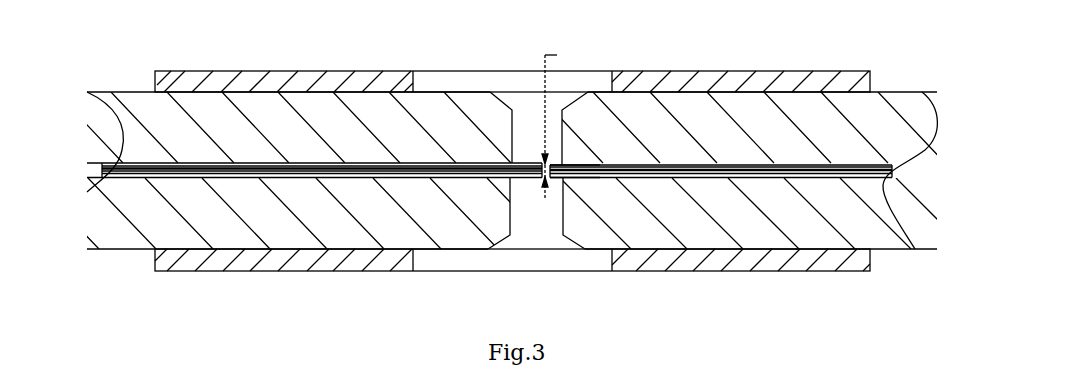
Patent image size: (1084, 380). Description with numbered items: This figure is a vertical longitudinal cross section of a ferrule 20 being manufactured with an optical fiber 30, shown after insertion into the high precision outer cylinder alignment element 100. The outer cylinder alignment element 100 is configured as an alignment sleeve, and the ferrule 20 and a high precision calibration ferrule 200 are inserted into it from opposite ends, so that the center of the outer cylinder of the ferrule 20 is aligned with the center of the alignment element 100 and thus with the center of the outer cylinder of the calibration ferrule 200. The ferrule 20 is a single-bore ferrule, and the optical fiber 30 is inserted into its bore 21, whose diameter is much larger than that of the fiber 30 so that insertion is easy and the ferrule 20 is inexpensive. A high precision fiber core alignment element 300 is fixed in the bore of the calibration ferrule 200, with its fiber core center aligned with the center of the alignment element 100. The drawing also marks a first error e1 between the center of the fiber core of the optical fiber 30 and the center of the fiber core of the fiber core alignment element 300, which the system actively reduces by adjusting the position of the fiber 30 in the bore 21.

The outer cylinder alignment element 100 is at (702, 81).
The ferrule 20 is at (340, 232).
The high precision calibration ferrule 200 is at (717, 235).
The bore 21 is at (227, 178).
The optical fiber 30 is at (528, 172).
The high precision fiber core alignment element 300 is at (558, 173).
The first error e1 is at (562, 123).